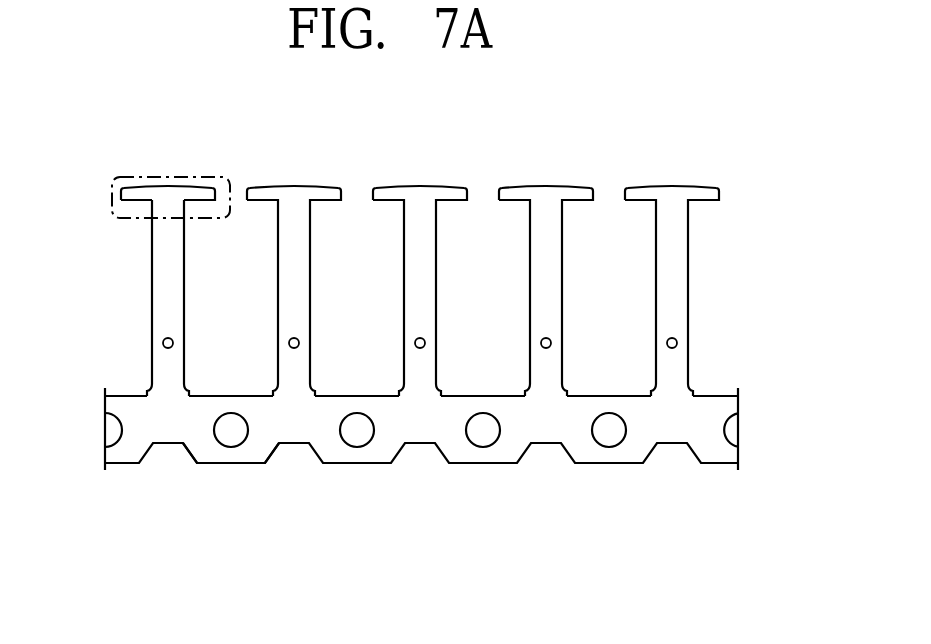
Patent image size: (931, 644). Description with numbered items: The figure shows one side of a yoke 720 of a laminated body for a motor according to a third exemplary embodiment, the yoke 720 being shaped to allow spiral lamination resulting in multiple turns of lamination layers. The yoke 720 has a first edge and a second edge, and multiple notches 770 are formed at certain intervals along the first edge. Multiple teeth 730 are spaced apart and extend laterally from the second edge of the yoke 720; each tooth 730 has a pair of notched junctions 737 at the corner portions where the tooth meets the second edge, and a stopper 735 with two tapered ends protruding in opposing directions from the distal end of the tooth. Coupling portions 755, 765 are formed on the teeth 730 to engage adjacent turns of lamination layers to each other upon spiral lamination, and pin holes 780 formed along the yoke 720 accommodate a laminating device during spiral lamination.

The yoke 720 is at (756, 161).
The tooth 730 is at (158, 266).
The stopper 735 is at (170, 177).
The notched junction 737 is at (273, 384).
The coupling portion 755 is at (110, 347).
The coupling portion 765 is at (163, 343).
The notch 770 is at (297, 448).
The pin hole 780 is at (358, 434).